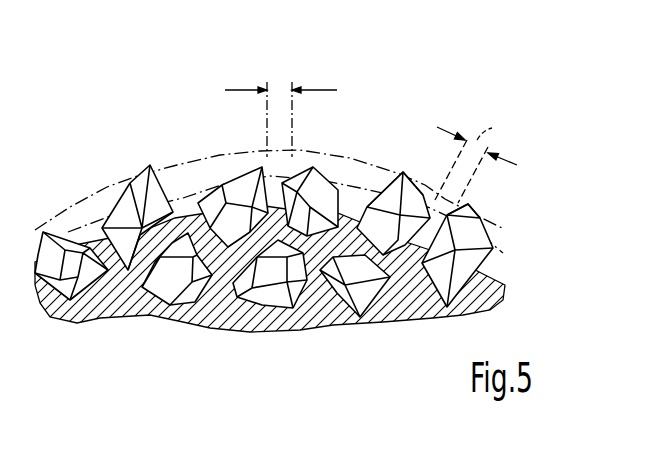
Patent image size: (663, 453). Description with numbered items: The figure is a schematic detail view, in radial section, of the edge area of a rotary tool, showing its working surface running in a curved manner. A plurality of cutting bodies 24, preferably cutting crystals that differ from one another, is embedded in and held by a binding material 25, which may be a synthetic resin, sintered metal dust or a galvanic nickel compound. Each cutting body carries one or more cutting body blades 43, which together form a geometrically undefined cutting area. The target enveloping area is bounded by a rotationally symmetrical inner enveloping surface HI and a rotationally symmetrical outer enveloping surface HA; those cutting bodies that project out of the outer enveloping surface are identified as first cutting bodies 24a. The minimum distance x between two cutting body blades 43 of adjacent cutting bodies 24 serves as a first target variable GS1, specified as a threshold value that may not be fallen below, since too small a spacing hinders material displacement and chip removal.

The cutting bodies 24 is at (187, 297).
The first cutting bodies 24a is at (133, 193).
The binding material 25 is at (405, 310).
The cutting body blades 43 is at (240, 163).
The first target variable GS1 is at (282, 72).
The outer enveloping surface HA is at (502, 228).
The inner enveloping surface HI is at (503, 253).